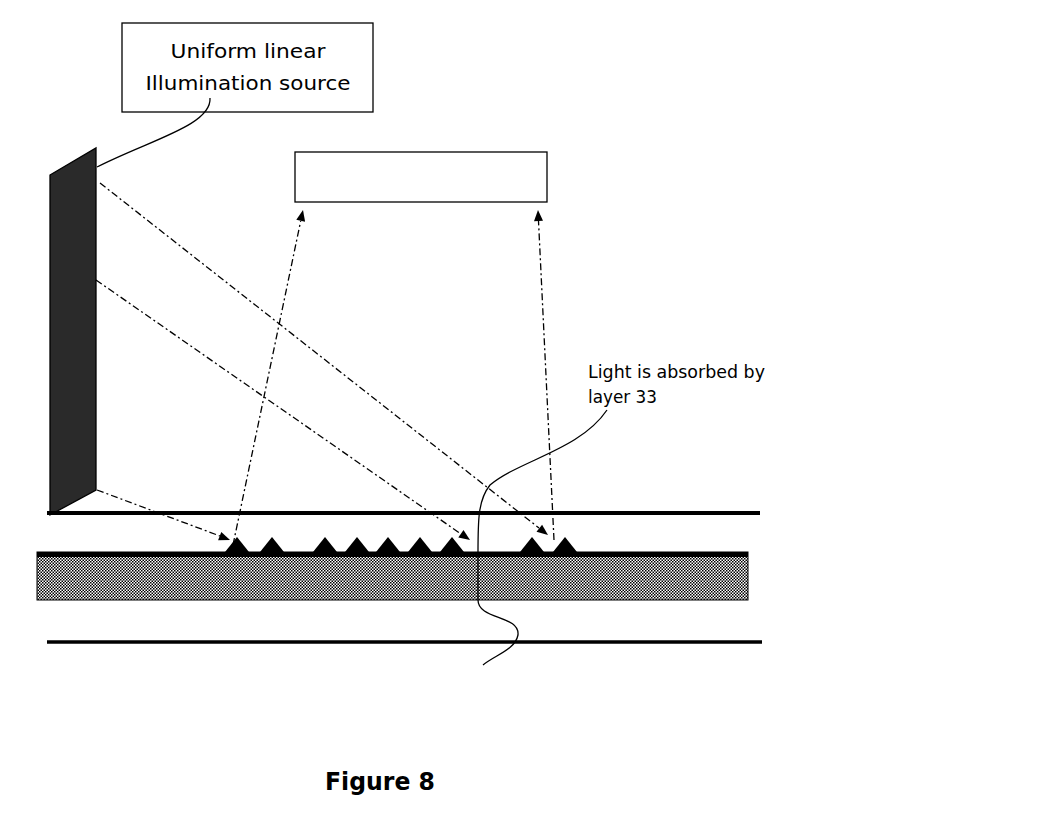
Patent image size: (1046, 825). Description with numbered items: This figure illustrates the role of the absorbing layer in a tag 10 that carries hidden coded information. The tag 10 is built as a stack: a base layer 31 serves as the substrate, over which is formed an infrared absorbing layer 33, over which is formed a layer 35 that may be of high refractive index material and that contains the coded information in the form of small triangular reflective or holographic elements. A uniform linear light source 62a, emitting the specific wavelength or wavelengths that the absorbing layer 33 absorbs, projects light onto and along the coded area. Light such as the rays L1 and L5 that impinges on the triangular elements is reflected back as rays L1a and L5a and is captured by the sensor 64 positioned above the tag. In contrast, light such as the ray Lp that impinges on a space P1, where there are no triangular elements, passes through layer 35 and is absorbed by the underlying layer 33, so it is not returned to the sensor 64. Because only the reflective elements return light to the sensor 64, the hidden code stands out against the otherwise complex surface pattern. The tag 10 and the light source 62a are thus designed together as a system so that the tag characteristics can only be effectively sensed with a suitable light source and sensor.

The tag 10 is at (703, 119).
The light source 62a is at (84, 148).
The sensor 64 is at (458, 152).
The layer of material 35 is at (725, 535).
The infrared absorbing layer 33 is at (735, 578).
The base layer 31 is at (735, 623).
The space P1 is at (495, 625).
The light L1 is at (108, 492).
The reflected light L1a is at (292, 266).
The light Lp is at (142, 313).
The light L5 is at (348, 377).
The reflected light L5a is at (543, 313).